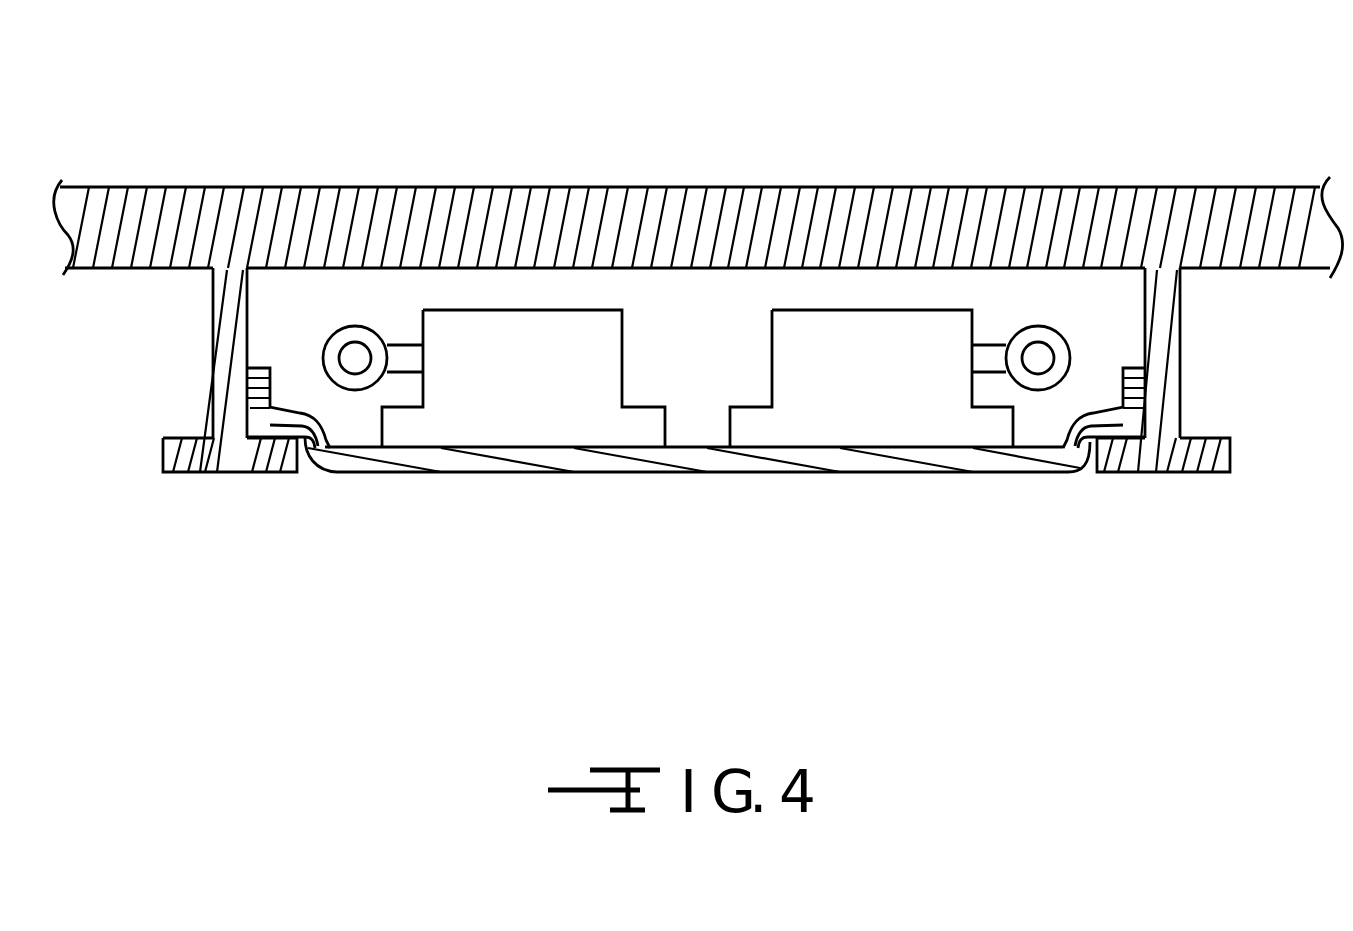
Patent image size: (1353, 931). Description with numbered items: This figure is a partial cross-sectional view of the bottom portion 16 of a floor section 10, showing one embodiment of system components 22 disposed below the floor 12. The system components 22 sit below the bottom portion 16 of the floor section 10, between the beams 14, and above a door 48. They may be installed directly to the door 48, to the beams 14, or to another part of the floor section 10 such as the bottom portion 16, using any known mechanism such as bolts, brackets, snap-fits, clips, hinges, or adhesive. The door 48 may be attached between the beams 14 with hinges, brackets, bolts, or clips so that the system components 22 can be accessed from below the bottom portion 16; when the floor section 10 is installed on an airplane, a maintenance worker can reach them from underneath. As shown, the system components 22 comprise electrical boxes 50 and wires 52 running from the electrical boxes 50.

The floor section 10 is at (111, 129).
The floor 12 is at (150, 227).
The beams 14 is at (200, 375).
The bottom portion 16 is at (1103, 282).
The system components 22 is at (491, 362).
The door 48 is at (1022, 486).
The electrical boxes 50 is at (564, 362).
The wires 52 is at (355, 390).